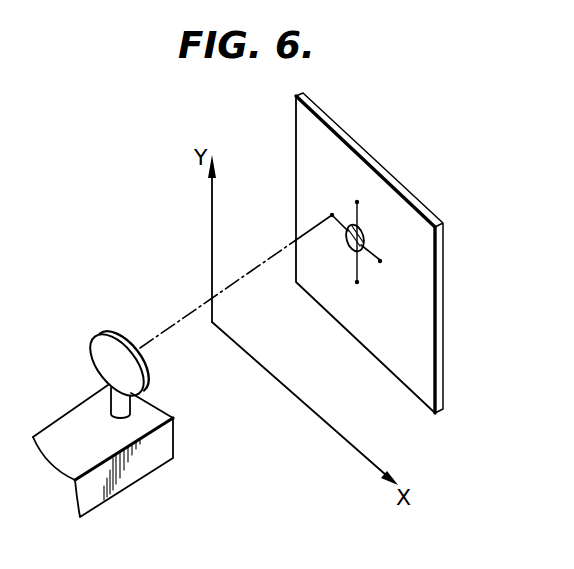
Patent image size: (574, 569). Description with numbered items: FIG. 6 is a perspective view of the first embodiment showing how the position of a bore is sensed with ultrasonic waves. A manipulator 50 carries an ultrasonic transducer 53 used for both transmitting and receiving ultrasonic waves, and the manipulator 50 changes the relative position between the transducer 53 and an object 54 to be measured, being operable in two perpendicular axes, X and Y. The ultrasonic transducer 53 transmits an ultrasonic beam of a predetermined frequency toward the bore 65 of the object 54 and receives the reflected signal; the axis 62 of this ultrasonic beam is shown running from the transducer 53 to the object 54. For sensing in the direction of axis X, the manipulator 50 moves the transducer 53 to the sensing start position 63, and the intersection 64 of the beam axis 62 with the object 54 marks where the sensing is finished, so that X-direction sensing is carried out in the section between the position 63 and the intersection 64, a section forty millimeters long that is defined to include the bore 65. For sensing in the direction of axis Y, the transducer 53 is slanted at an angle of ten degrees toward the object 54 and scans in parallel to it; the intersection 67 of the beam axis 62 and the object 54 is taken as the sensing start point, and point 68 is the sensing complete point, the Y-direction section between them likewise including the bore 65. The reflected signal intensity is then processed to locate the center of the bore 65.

The manipulator 50 is at (162, 433).
The ultrasonic transducer 53 is at (100, 338).
The object 54 is at (428, 241).
The axis of ultrasonic beam 62 is at (177, 322).
The sensing start position 63 is at (332, 215).
The intersection of beam axis and object at end of sensing 64 is at (380, 261).
The bore 65 is at (363, 234).
The intersection serving as sensing start point 67 is at (357, 200).
The sensing complete point 68 is at (357, 283).